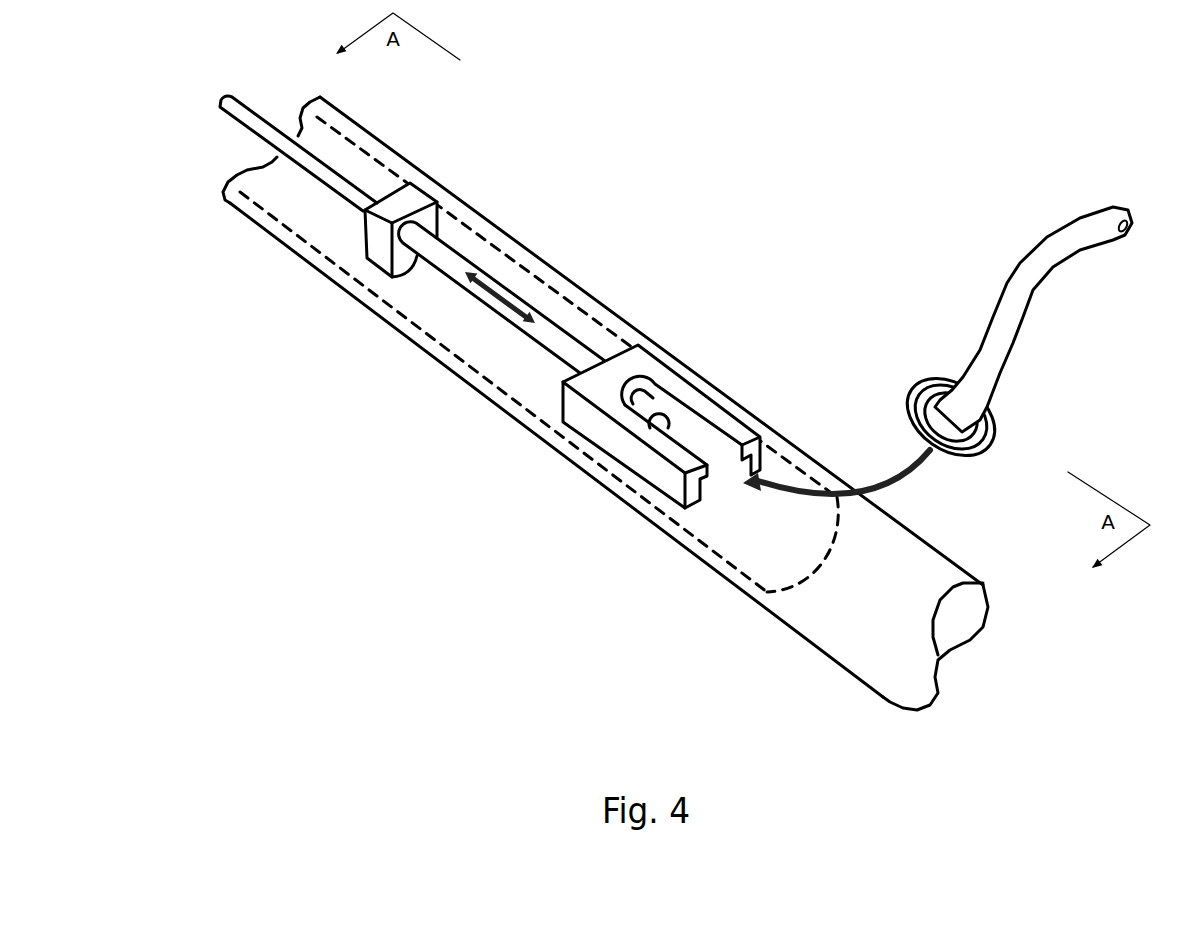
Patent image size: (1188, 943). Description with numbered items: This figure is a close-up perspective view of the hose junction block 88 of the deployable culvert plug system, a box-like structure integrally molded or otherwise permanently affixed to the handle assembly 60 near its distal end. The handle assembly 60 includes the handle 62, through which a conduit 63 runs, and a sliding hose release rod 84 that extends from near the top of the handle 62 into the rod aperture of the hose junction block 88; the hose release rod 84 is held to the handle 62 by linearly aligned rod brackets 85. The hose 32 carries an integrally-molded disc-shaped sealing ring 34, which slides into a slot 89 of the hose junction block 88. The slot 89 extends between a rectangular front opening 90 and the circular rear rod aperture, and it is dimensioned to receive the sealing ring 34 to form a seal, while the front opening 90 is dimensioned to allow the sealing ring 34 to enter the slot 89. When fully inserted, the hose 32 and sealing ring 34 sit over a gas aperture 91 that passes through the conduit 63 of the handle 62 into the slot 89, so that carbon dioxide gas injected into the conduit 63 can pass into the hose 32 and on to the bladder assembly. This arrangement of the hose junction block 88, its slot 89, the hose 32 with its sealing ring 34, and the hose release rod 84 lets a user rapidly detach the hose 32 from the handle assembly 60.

The handle assembly 60 is at (553, 225).
The handle 62 is at (435, 357).
The conduit 63 is at (503, 393).
The hose release rod 84 is at (458, 282).
The rod brackets 85 is at (408, 198).
The hose junction block 88 is at (633, 428).
The slot 89 is at (683, 448).
The gas aperture 91 is at (665, 412).
The front opening 90 is at (722, 500).
The hose 32 is at (1030, 322).
The sealing ring 34 is at (997, 435).